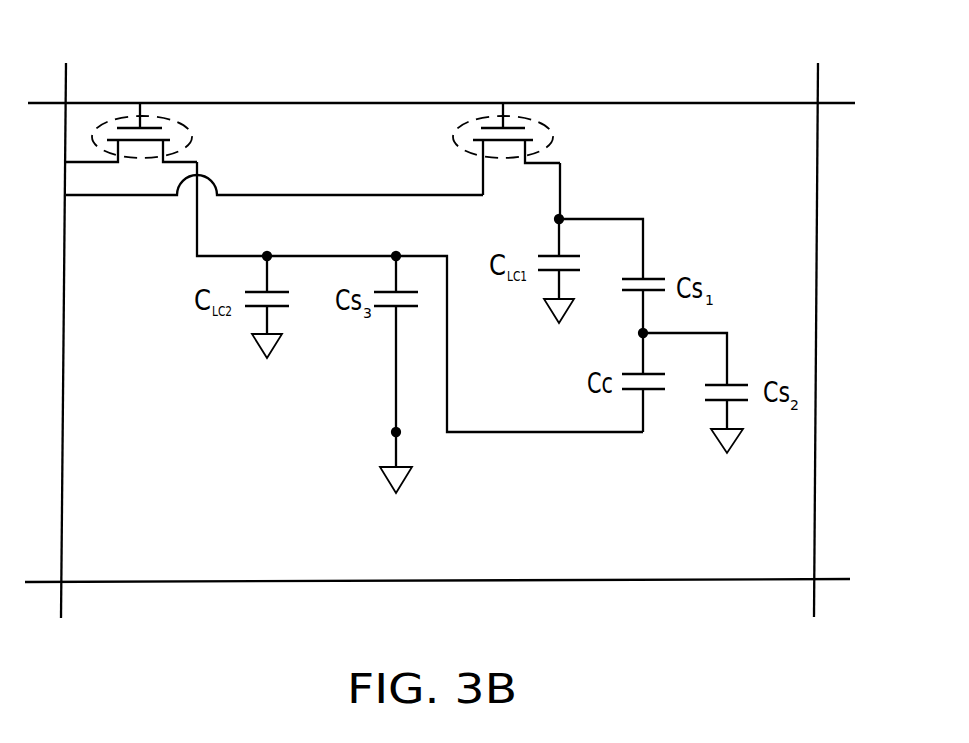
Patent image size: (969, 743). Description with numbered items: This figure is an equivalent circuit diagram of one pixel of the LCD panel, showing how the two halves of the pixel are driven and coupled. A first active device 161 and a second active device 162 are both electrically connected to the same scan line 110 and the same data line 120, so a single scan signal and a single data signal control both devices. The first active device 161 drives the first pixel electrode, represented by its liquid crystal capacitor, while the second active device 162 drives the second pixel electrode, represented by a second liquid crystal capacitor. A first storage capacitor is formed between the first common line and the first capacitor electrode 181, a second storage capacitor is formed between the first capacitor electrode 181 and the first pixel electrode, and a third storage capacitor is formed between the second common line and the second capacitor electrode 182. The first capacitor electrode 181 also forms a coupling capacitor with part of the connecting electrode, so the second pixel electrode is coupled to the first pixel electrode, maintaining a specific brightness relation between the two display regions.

The scan line 110 is at (833, 101).
The data line 120 is at (67, 87).
The first active device 161 is at (555, 137).
The second active device 162 is at (193, 137).
The first capacitor electrode 181 is at (725, 461).
The second capacitor electrode 182 is at (395, 500).